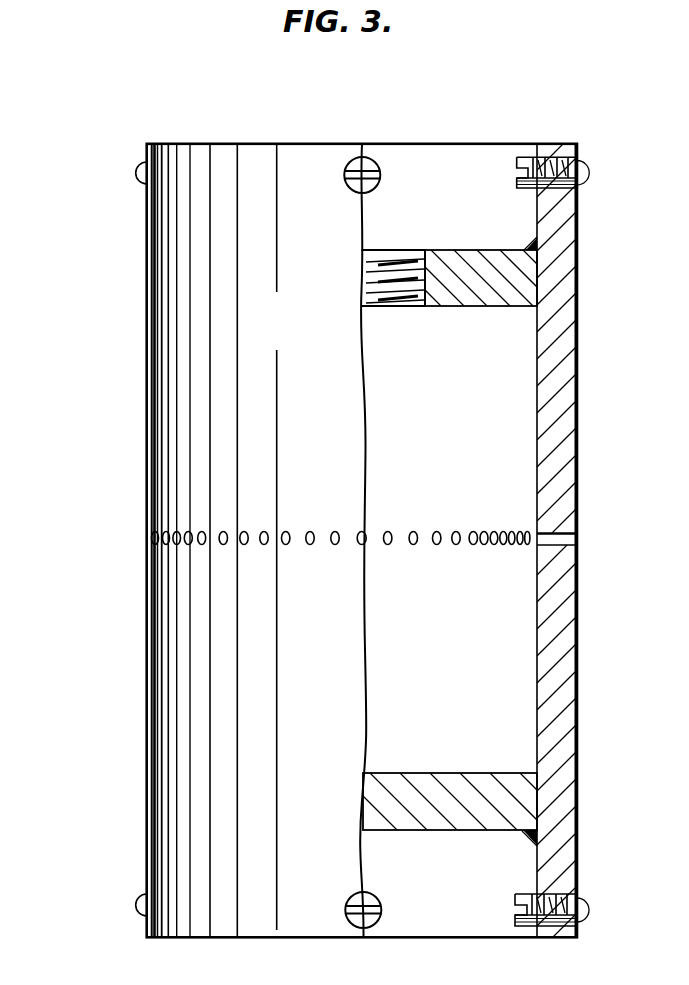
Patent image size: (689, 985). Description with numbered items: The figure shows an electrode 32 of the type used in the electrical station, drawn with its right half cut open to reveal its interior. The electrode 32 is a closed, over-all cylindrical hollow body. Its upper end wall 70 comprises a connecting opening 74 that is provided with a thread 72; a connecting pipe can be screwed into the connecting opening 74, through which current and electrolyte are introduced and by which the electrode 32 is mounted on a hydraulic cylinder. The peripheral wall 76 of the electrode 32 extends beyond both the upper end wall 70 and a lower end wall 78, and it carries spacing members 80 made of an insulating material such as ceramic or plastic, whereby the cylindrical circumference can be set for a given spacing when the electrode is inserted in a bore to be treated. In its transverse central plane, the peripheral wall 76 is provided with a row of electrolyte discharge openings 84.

The electrode 32 is at (104, 94).
The upper end wall 70 is at (498, 298).
The thread 72 is at (421, 289).
The connecting opening 74 is at (381, 250).
The peripheral wall 76 is at (569, 438).
The lower end wall 78 is at (467, 777).
The spacing members 80 is at (589, 169).
The electrolyte discharge openings 84 is at (185, 540).